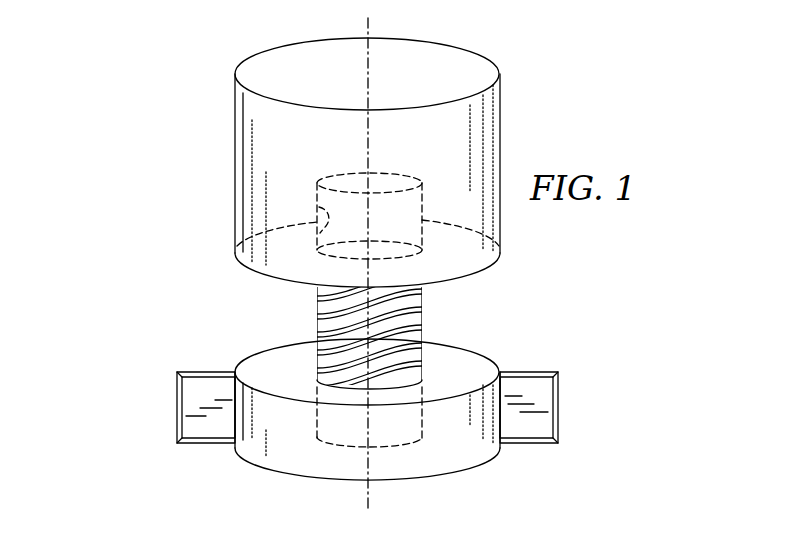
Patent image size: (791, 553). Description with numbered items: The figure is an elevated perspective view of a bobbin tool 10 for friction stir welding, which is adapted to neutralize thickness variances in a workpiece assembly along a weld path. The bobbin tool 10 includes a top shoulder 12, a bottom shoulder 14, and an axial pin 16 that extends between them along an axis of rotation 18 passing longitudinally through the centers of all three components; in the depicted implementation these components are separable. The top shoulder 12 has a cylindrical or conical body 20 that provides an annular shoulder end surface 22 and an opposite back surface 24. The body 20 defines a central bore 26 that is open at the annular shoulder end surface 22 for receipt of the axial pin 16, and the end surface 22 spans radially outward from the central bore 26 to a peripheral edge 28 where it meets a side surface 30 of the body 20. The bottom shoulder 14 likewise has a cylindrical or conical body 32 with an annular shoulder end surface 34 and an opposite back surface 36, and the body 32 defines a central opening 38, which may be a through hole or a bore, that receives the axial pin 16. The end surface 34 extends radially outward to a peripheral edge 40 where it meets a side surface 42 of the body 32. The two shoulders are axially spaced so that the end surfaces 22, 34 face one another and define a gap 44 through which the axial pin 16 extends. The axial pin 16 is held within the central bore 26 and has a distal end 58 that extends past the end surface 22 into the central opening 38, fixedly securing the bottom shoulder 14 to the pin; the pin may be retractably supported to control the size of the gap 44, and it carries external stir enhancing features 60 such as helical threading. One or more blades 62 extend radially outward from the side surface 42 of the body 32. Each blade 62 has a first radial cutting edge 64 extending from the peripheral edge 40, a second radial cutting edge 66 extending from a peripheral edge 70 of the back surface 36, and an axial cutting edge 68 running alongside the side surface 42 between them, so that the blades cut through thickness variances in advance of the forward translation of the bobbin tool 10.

The bobbin tool 10 is at (140, 155).
The top shoulder 12 is at (336, 165).
The bottom shoulder 14 is at (354, 422).
The axial pin 16 is at (425, 322).
The axis of rotation 18 is at (372, 26).
The body 20 is at (263, 143).
The annular shoulder end surface 22 is at (280, 283).
The back surface 24 is at (468, 62).
The central bore 26 is at (317, 242).
The peripheral edge 28 is at (240, 266).
The side surface 30 is at (238, 187).
The body 32 is at (297, 460).
The annular shoulder end surface 34 is at (261, 367).
The back surface 36 is at (265, 470).
The central opening 38 is at (421, 417).
The peripheral edge 40 is at (361, 406).
The side surface 42 is at (235, 410).
The gap 44 is at (275, 323).
The distal end 58 is at (398, 447).
The external stir enhancing features 60 is at (425, 302).
The blade 62 is at (190, 426).
The first radial cutting edge 64 is at (196, 371).
The second radial cutting edge 66 is at (207, 446).
The axial cutting edge 68 is at (176, 386).
The peripheral edge 70 is at (474, 466).